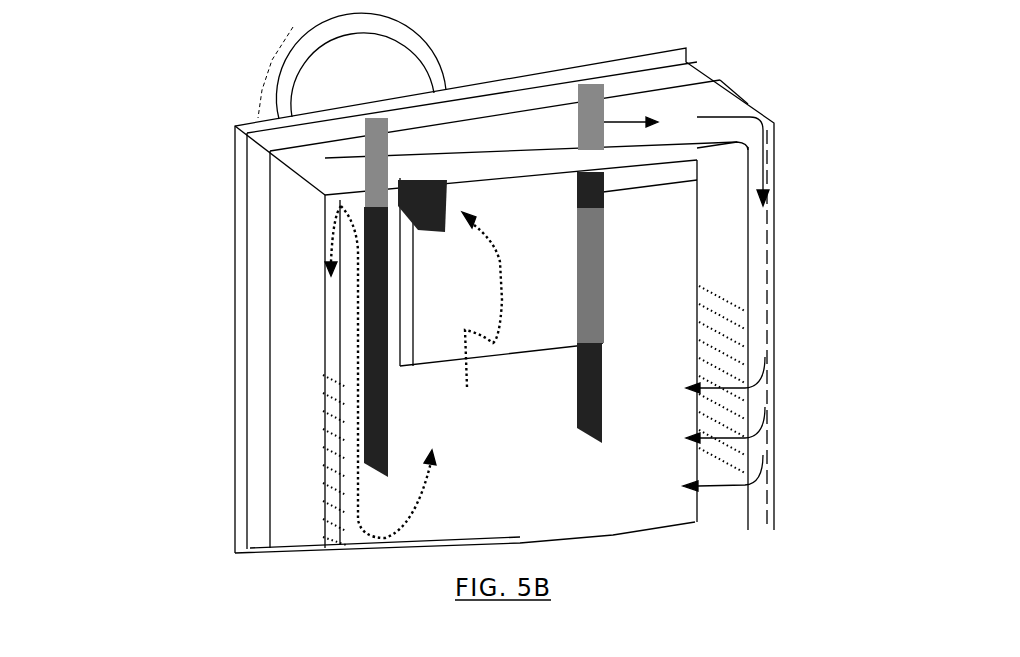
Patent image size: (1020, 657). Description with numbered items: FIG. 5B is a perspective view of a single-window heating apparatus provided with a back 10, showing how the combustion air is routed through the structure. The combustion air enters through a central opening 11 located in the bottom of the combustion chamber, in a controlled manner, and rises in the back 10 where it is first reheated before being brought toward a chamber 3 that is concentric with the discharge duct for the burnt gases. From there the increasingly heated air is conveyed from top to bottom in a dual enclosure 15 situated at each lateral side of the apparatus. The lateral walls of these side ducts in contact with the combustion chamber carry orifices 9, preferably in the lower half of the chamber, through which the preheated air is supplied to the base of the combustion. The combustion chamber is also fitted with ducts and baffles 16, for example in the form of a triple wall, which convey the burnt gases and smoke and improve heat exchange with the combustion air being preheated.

The chamber 3 is at (332, 67).
The orifices 9 is at (735, 300).
The back 10 is at (235, 401).
The central opening 11 is at (445, 512).
The dual enclosure 15 is at (763, 265).
The ducts and baffles 16 is at (415, 321).